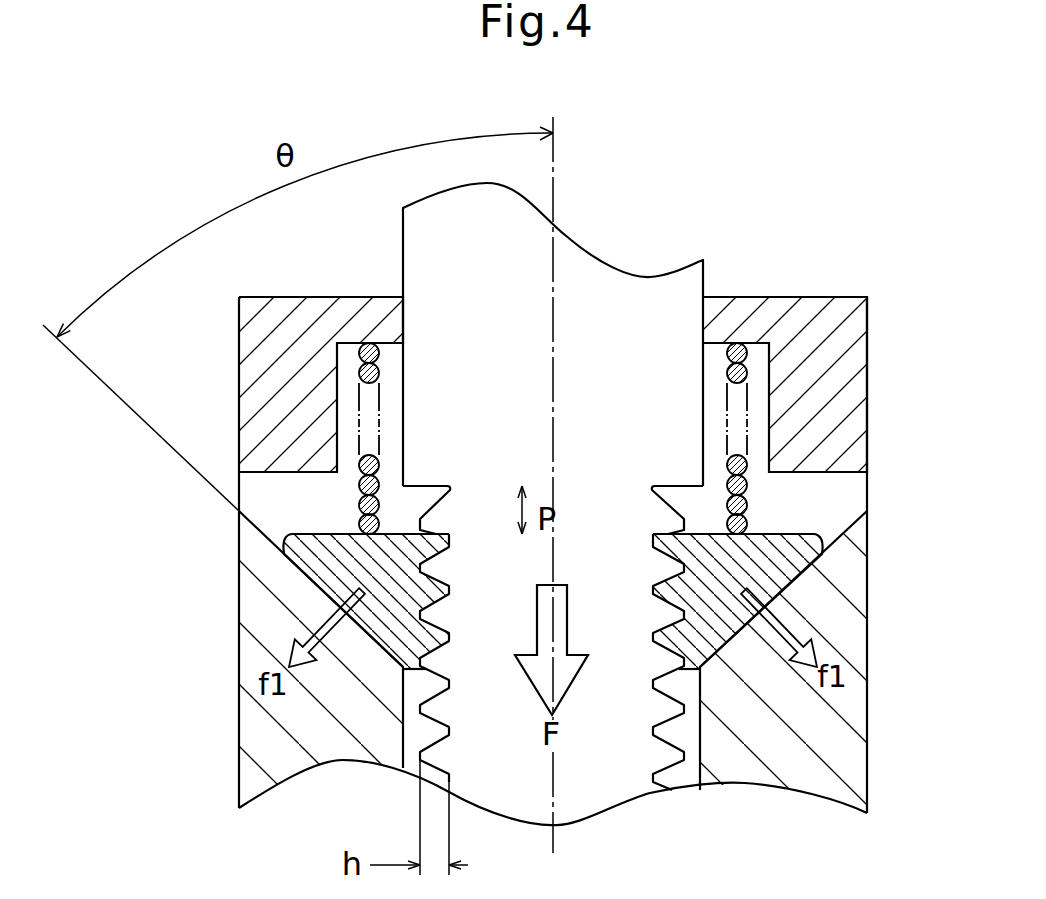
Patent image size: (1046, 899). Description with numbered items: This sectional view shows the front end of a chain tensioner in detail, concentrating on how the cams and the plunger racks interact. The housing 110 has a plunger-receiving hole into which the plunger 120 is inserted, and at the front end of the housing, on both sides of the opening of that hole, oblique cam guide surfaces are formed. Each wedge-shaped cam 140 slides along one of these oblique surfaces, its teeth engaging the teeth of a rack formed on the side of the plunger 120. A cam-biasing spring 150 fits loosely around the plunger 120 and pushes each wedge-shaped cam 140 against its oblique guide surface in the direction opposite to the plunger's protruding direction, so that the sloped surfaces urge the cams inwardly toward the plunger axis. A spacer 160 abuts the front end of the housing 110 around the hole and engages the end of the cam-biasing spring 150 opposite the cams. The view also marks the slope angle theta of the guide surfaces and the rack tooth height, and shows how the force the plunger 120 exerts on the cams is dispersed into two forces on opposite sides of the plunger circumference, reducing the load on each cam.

The housing 110 is at (797, 763).
The plunger 120 is at (628, 778).
The wedge-shaped cam 140 is at (800, 540).
The cam-biasing spring 150 is at (746, 489).
The spacer 160 is at (845, 371).